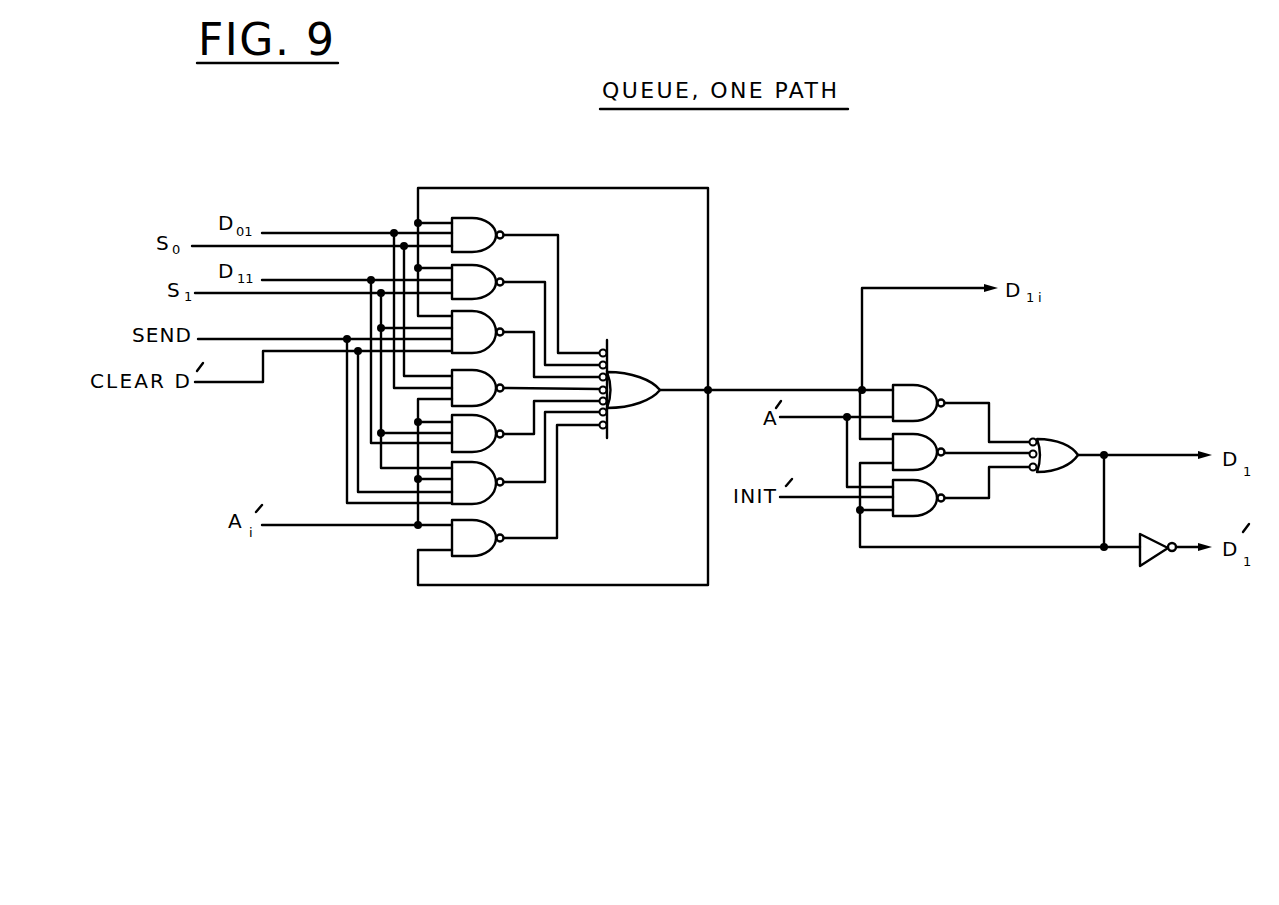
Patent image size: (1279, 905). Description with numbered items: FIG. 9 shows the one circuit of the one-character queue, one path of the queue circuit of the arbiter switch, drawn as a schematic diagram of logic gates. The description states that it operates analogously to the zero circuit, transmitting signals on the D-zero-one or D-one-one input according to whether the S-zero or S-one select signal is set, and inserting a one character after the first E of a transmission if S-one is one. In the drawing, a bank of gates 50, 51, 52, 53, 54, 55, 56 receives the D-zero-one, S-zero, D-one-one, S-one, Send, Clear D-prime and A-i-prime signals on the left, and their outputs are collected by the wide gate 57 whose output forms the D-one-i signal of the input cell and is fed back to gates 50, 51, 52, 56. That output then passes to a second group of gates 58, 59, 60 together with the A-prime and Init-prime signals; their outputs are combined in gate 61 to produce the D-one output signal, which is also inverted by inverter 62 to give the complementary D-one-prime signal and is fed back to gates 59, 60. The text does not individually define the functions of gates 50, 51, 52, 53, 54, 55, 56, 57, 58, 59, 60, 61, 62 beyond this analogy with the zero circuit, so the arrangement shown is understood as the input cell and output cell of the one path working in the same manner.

The NAND gate 50 is at (498, 222).
The NAND gate 51 is at (498, 268).
The NAND gate 52 is at (490, 314).
The NAND gate 53 is at (488, 371).
The NAND gate 54 is at (486, 417).
The NAND gate 55 is at (494, 464).
The NAND gate 56 is at (494, 522).
The OR gate with inverted inputs 57 is at (648, 400).
The NAND gate 58 is at (937, 387).
The NAND gate 59 is at (932, 435).
The NAND gate 60 is at (930, 481).
The OR gate with inverted inputs 61 is at (1045, 441).
The inverter 62 is at (1156, 559).